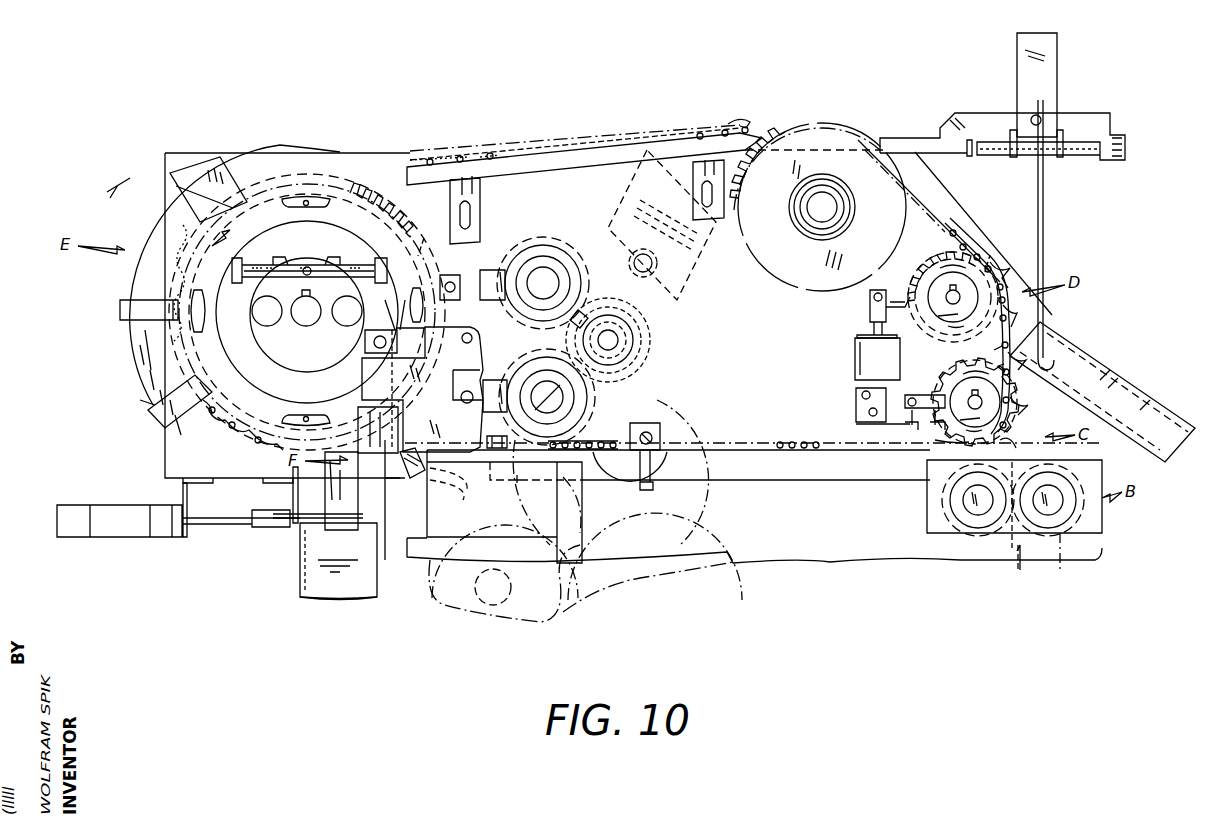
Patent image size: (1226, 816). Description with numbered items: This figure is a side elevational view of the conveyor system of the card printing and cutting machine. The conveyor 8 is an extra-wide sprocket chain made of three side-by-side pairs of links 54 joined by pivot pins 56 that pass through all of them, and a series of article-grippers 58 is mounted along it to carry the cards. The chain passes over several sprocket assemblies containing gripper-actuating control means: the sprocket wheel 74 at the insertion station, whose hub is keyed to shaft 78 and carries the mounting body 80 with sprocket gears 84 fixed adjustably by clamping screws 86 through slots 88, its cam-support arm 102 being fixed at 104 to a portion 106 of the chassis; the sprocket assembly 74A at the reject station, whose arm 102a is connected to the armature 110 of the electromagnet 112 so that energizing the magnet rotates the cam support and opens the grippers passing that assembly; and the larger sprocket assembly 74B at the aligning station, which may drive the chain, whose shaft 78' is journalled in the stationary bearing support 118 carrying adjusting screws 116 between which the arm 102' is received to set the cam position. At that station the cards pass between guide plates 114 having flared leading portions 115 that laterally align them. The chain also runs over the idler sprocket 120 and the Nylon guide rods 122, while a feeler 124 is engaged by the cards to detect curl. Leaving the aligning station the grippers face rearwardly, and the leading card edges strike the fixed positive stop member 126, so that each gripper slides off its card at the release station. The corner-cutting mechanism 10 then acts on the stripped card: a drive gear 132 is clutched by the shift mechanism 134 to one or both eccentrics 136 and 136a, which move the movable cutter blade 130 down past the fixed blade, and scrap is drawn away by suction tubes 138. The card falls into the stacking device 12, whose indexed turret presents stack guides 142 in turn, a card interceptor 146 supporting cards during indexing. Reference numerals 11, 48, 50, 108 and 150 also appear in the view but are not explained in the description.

The conveyor 8 is at (425, 130).
The corner-cutting mechanism 10 is at (446, 275).
The section line 11 is at (112, 196).
The stacking device 12 is at (268, 573).
The roller housing 48 is at (970, 533).
The roller shaft 50 is at (1062, 560).
The links 54 is at (988, 346).
The pivot pins 56 is at (1002, 364).
The article-grippers 58 is at (1058, 313).
The sprocket wheel 74 is at (930, 355).
The sprocket assembly 74A is at (1008, 232).
The sprocket assembly 74B is at (432, 216).
The shaft 78 is at (978, 333).
The shaft 78' is at (319, 322).
The mounting body 80 is at (959, 367).
The sprocket gears 84 is at (945, 270).
The clamping screws 86 is at (304, 206).
The slots 88 is at (298, 202).
The arm 102 is at (926, 400).
The arm 102' is at (314, 252).
The arm 102a is at (934, 318).
The fixing point 104 is at (880, 404).
The chassis portion 106 is at (881, 360).
The actuator 108 is at (915, 392).
The armature 110 is at (872, 322).
The electromagnet 112 is at (856, 355).
The guide plates 114 is at (287, 297).
The flared leading portions 115 is at (220, 170).
The adjusting screws 116 is at (260, 264).
The stationary bearing support 118 is at (318, 338).
The idler sprocket 120 is at (785, 265).
The Nylon guide rods 122 is at (574, 157).
The feeler 124 is at (1045, 244).
The positive stop member 126 is at (396, 512).
The movable cutter blade 130 is at (395, 330).
The drive gear 132 is at (618, 374).
The shift mechanism 134 is at (504, 343).
The eccentric 136 is at (570, 280).
The eccentric 136a is at (588, 400).
The suction tubes 138 is at (462, 492).
The stack guides 142 is at (348, 590).
The card interceptor 146 is at (325, 490).
The chute 150 is at (1142, 406).